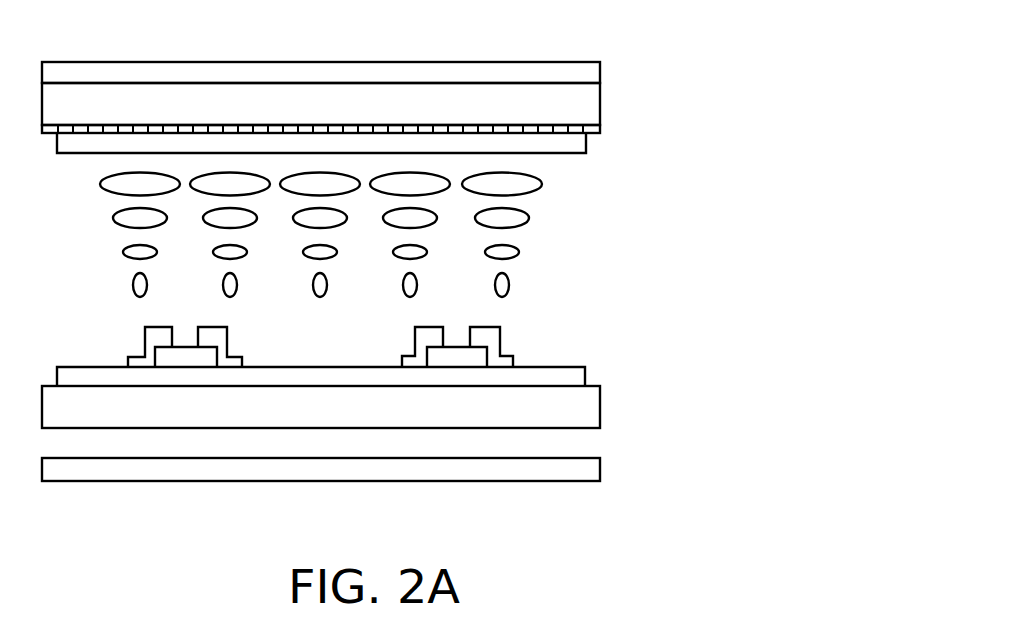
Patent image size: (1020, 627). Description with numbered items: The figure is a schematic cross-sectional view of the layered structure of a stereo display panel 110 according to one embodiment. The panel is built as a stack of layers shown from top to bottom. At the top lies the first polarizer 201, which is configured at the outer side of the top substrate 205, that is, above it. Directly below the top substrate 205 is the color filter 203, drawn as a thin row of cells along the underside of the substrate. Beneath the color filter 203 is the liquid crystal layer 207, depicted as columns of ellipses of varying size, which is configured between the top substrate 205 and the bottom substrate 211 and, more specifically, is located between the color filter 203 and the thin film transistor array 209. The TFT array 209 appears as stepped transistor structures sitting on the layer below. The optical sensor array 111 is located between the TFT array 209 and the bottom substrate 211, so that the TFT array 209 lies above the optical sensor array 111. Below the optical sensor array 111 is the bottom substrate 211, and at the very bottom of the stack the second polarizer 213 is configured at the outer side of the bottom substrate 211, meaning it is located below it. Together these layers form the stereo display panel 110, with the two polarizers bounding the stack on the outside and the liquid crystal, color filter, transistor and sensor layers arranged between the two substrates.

The stereo display panel 110 is at (700, 573).
The first polarizer 201 is at (586, 72).
The top substrate 205 is at (578, 108).
The color filter 203 is at (593, 128).
The liquid crystal layer 207 is at (508, 252).
The thin film transistor (TFT) array 209 is at (490, 338).
The optical sensor array 111 is at (570, 378).
The bottom substrate 211 is at (582, 403).
The second polarizer 213 is at (583, 468).